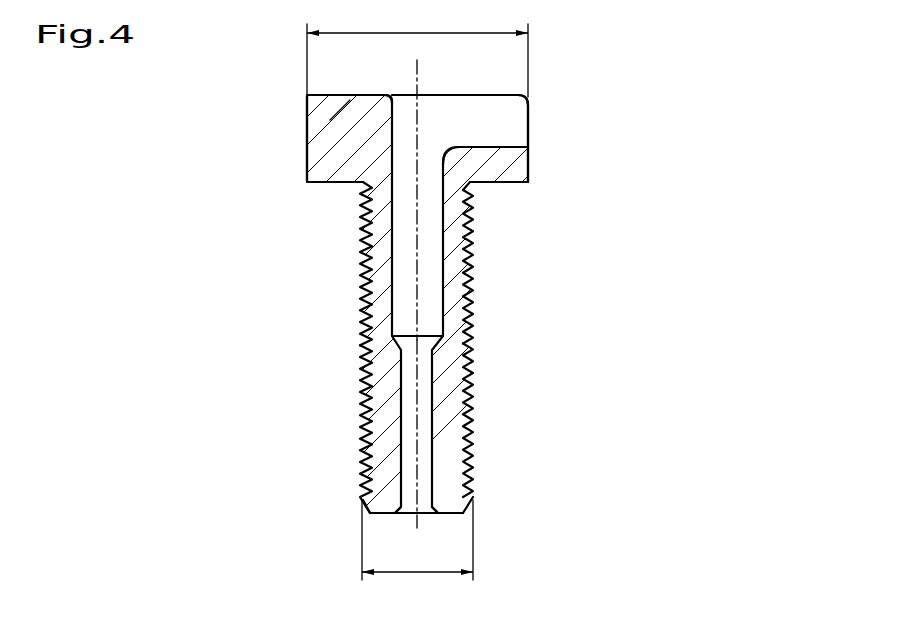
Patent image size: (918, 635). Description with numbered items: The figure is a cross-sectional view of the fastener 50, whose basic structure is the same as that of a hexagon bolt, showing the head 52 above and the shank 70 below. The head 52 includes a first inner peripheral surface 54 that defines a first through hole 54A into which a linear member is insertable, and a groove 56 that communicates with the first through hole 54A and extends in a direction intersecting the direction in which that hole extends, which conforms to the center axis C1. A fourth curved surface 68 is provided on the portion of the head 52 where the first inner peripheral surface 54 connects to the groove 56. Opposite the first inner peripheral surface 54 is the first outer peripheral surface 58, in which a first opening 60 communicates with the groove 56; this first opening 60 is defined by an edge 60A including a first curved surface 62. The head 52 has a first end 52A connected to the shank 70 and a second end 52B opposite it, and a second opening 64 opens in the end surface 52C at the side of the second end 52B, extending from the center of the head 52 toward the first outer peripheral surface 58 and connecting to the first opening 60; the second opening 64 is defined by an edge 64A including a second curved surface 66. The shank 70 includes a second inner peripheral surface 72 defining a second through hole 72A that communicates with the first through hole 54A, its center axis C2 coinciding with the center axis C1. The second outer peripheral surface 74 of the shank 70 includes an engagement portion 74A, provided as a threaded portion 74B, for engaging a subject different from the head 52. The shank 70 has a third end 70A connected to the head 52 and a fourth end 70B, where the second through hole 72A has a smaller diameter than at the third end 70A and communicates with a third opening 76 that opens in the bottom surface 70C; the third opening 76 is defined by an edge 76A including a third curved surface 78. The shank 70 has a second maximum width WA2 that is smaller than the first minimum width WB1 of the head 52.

The fastener 50 is at (617, 52).
The head 52 is at (281, 73).
The first end 52A is at (307, 175).
The second end 52B is at (307, 102).
The end surface 52C is at (518, 94).
The first inner peripheral surface 54 is at (457, 190).
The first through hole 54A is at (396, 181).
The groove 56 is at (493, 130).
The first outer peripheral surface 58 is at (307, 135).
The first opening 60 is at (548, 121).
The edge 60A is at (520, 110).
The first curved surface 62 is at (522, 142).
The second opening 64 is at (460, 77).
The edge 64A is at (468, 108).
The second curved surface 66 is at (392, 97).
The fourth curved surface 68 is at (448, 188).
The shank 70 is at (291, 488).
The third end 70A is at (470, 240).
The fourth end 70B is at (470, 473).
The bottom surface 70C is at (455, 517).
The second inner peripheral surface 72 is at (436, 268).
The second through hole 72A is at (385, 277).
The second outer peripheral surface 74 is at (468, 321).
The engagement portion 74A is at (366, 429).
The threaded portion 74B is at (362, 386).
The third opening 76 is at (339, 542).
The edge 76A is at (410, 514).
The third curved surface 78 is at (430, 515).
The center axis C1 is at (415, 68).
The center axis C2 is at (417, 378).
The first minimum width WB1 is at (417, 51).
The second maximum width WA2 is at (417, 552).